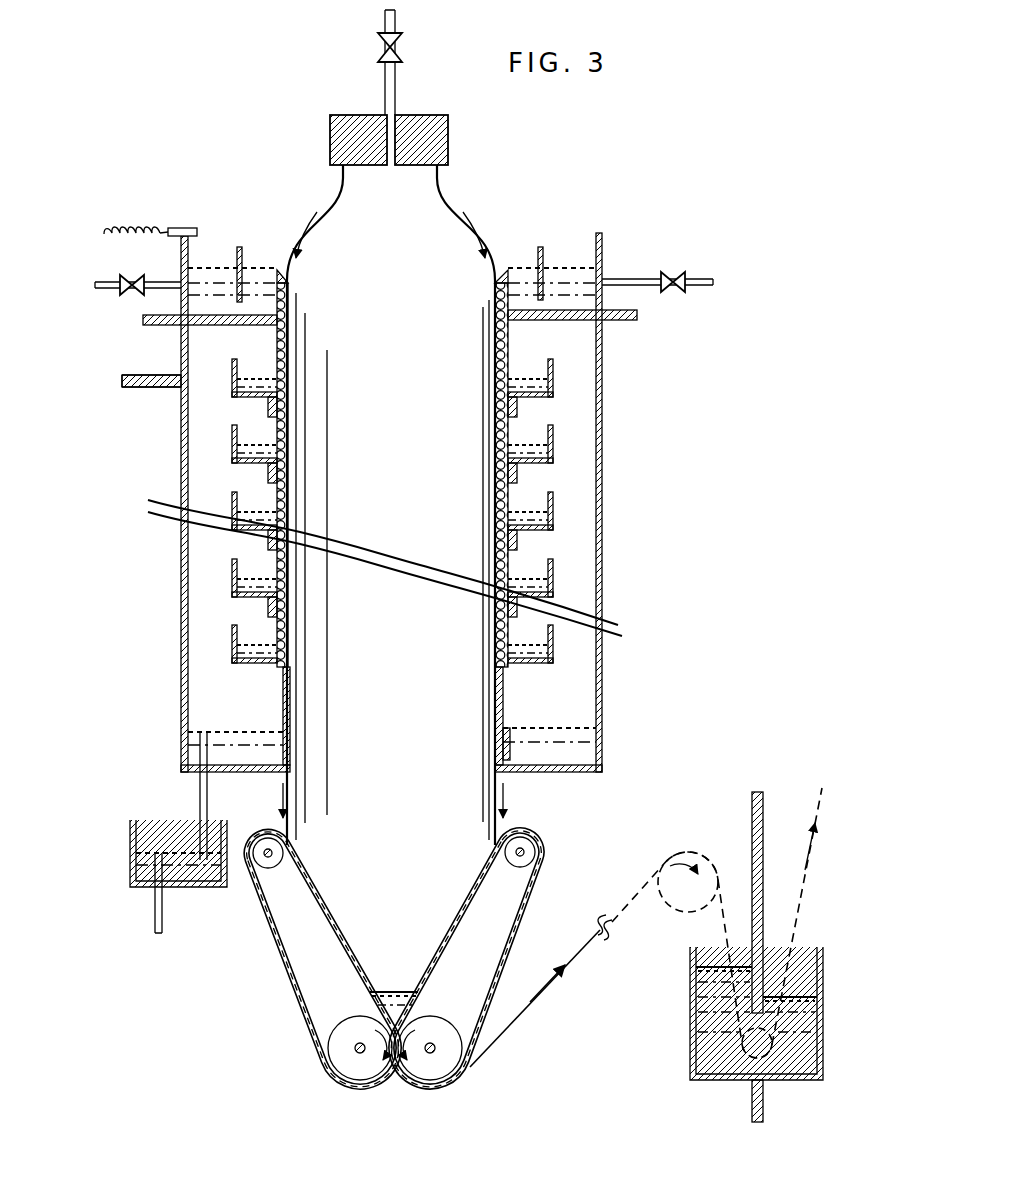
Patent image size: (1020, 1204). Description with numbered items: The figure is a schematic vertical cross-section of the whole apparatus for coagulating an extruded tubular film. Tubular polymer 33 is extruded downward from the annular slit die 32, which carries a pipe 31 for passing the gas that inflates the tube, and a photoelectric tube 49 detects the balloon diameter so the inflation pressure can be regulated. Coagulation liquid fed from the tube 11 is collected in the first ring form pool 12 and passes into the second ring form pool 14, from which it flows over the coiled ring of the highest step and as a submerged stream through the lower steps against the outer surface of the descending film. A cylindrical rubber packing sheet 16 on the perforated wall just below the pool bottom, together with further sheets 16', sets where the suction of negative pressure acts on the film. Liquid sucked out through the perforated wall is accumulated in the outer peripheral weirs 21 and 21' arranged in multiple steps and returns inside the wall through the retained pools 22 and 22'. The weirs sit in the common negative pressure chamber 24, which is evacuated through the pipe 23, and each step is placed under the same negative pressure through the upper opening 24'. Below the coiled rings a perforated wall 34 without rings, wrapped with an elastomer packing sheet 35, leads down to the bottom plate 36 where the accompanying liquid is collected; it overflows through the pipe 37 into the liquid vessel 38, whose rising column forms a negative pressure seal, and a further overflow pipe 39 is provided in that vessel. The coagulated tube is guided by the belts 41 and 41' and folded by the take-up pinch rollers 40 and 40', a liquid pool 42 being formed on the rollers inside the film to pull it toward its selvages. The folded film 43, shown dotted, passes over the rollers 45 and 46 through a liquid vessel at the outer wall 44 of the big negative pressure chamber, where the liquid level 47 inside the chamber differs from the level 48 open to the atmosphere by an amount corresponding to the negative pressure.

The tube 11 is at (105, 292).
The first ring form pool 12 is at (208, 262).
The second ring form pool 14 is at (258, 275).
The cylindrical rubber packing sheet 16 is at (541, 369).
The rubber packing sheet 16' is at (554, 533).
The outer peripheral weir 21 is at (234, 511).
The outer peripheral weir 21' is at (235, 588).
The pool 22 is at (235, 500).
The pool 22' is at (208, 564).
The pipe 23 is at (148, 385).
The common negative pressure chamber 24 is at (170, 504).
The upper opening 24' is at (207, 469).
The pipe 31 is at (397, 17).
The annular slit die 32 is at (444, 130).
The tubular polymer 33 is at (468, 200).
The perforated wall 34 is at (283, 691).
The elastomer packing sheet 35 is at (508, 735).
The bottom plate 36 is at (190, 770).
The pipe 37 is at (198, 806).
The liquid vessel 38 is at (157, 870).
The overflow pipe 39 is at (165, 912).
The take-up pinch roller 40 is at (360, 1076).
The take-up pinch roller 40' is at (430, 1076).
The belt 41 is at (320, 959).
The belt 41' is at (488, 958).
The liquid pool 42 is at (393, 988).
The folded film 43 is at (531, 1006).
The outer wall 44 is at (762, 795).
The roller 45 is at (698, 850).
The roller 46 is at (748, 1052).
The liquid level 47 is at (721, 945).
The liquid level 48 is at (798, 995).
The photoelectric tube 49 is at (183, 226).